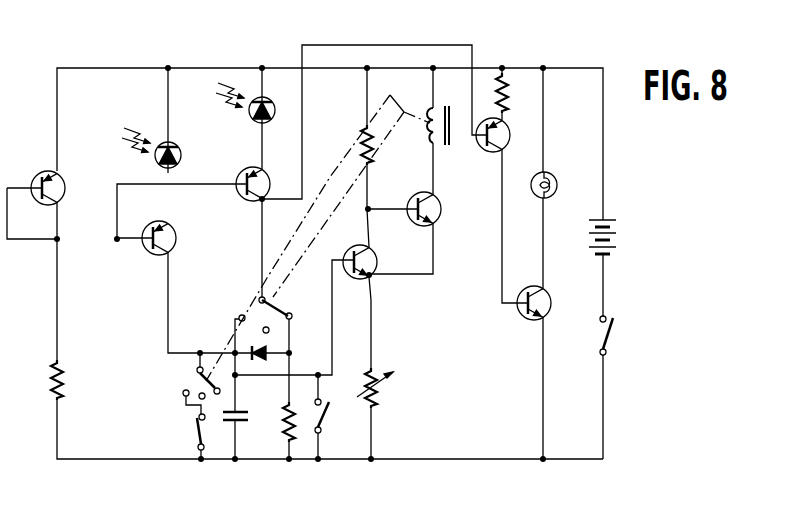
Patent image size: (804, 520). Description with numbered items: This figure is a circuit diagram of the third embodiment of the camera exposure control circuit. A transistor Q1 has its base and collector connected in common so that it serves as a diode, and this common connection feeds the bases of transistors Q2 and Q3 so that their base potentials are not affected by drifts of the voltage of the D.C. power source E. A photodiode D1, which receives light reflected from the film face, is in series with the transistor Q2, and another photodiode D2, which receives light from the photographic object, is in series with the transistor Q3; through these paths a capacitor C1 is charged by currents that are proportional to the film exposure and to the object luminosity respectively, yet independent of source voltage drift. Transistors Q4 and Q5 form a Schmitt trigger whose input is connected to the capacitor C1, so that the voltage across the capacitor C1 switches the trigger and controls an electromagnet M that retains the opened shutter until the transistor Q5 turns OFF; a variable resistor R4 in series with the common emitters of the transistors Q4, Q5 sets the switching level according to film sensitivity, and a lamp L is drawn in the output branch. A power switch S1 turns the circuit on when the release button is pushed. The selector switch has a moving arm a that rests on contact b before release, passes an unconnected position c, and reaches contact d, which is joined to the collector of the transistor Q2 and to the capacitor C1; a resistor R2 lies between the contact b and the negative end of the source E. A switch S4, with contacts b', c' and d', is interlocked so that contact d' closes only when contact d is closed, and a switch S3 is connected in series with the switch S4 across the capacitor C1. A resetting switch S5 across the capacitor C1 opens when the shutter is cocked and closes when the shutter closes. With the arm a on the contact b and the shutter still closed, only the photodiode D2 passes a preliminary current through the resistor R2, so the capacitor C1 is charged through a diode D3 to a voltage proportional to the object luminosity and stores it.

The transistor Q1 is at (56, 188).
The transistor Q2 is at (168, 238).
The transistor Q3 is at (260, 177).
The transistor Q4 is at (368, 256).
The transistor Q5 is at (434, 209).
The photodiode D1 is at (158, 148).
The photodiode D2 is at (253, 103).
The diode D3 is at (262, 361).
The resistor R2 is at (279, 420).
The variable resistor R4 is at (378, 389).
The capacitor C1 is at (240, 427).
The electromagnet M is at (442, 138).
The lamp L is at (550, 185).
The D.C. power source E is at (608, 237).
The power switch S1 is at (615, 335).
The switch S3 is at (191, 432).
The switch S4 is at (192, 373).
The resetting switch S5 is at (330, 416).
The moving arm a is at (259, 299).
The contact b is at (296, 307).
The position c is at (272, 333).
The contact d is at (234, 308).
The switch contact b' is at (223, 377).
The switch contact c' is at (208, 404).
The contact d' is at (178, 398).